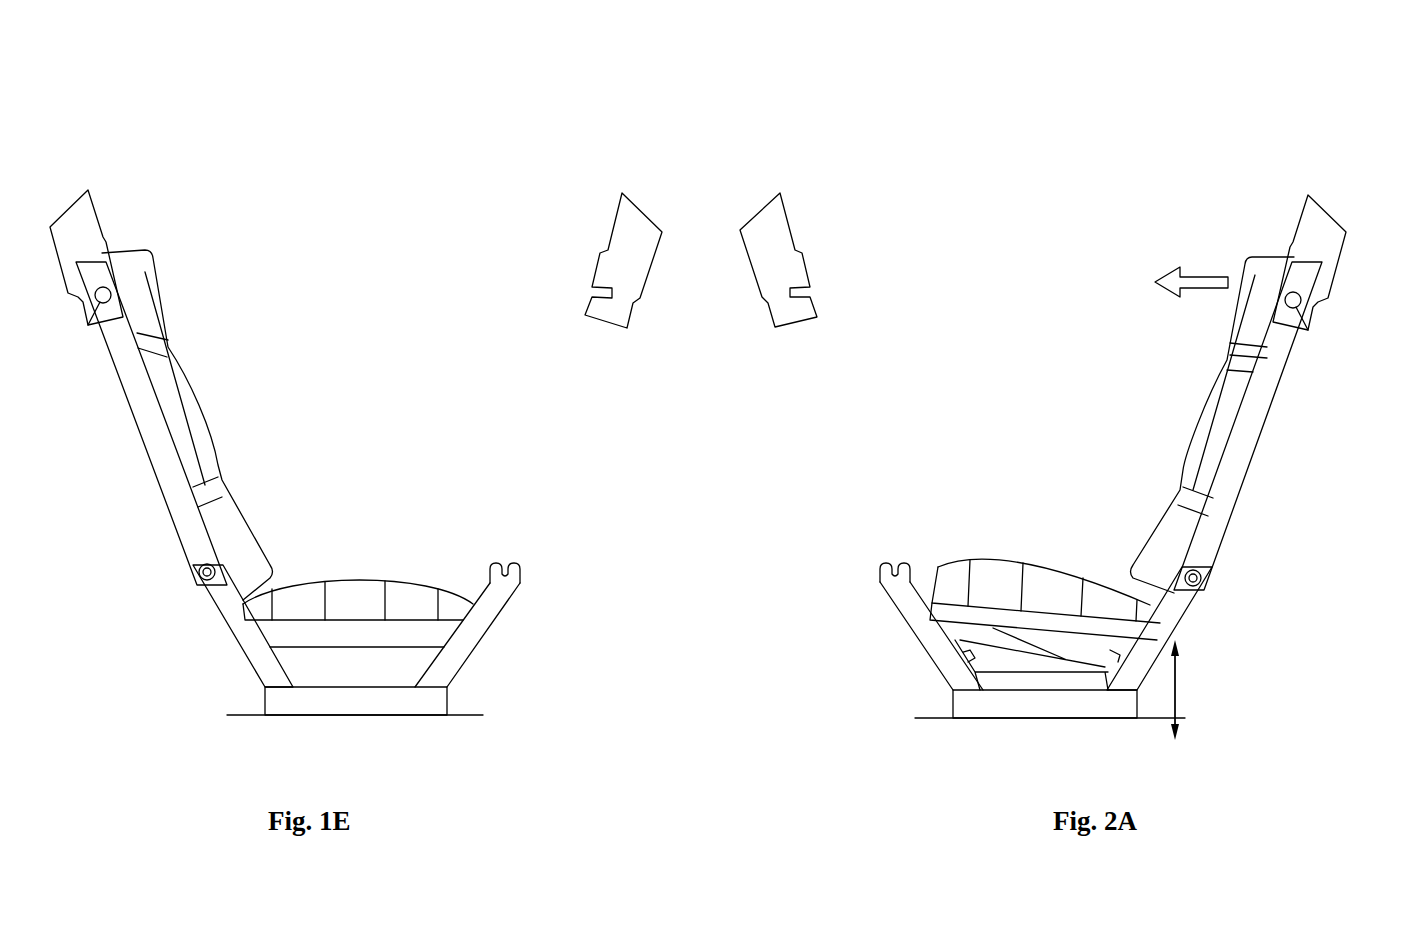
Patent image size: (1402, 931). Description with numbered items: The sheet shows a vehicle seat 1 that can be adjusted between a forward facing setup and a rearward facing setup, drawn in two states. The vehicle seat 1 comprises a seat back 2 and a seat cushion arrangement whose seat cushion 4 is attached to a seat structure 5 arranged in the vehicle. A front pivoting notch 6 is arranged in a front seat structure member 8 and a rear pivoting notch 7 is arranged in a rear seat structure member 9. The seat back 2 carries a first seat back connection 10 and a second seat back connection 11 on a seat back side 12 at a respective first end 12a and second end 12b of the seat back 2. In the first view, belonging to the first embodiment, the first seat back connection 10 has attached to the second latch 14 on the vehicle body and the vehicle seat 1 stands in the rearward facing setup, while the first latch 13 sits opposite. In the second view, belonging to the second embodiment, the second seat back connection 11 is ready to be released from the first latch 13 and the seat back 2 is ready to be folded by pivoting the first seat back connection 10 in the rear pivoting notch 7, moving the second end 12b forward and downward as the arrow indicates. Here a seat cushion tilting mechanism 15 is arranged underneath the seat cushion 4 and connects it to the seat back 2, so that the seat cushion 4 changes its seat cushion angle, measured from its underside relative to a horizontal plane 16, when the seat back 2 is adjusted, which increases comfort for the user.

In FIG. 1E, the vehicle seat 1 is at (480, 102).
In FIG. 2A, the vehicle seat 1 is at (922, 102).
In FIG. 1E, the seat back 2 is at (147, 425).
In FIG. 2A, the seat back 2 is at (1257, 425).
In FIG. 1E, the seat cushion 4 is at (355, 605).
In FIG. 2A, the seat cushion 4 is at (1046, 605).
In FIG. 1E, the seat structure 5 is at (420, 705).
In FIG. 2A, the seat structure 5 is at (957, 708).
In FIG. 1E, the front pivoting notch 6 is at (200, 580).
In FIG. 2A, the front pivoting notch 6 is at (883, 587).
In FIG. 1E, the rear pivoting notch 7 is at (522, 578).
In FIG. 2A, the rear pivoting notch 7 is at (1208, 580).
In FIG. 1E, the front seat structure member 8 is at (250, 650).
In FIG. 2A, the front seat structure member 8 is at (896, 626).
In FIG. 1E, the rear seat structure member 9 is at (502, 625).
In FIG. 2A, the rear seat structure member 9 is at (1177, 622).
In FIG. 1E, the first seat back connection 10 is at (87, 323).
In FIG. 2A, the first seat back connection 10 is at (1212, 593).
In FIG. 1E, the second seat back connection 11 is at (203, 582).
In FIG. 2A, the second seat back connection 11 is at (1310, 333).
In FIG. 1E, the seat back side 12 is at (147, 425).
In FIG. 2A, the seat back side 12 is at (1257, 425).
In FIG. 1E, the first end 12a is at (115, 365).
In FIG. 2A, the first end 12a is at (1215, 552).
In FIG. 1E, the second end 12b is at (185, 545).
In FIG. 2A, the second end 12b is at (1290, 365).
In FIG. 1E, the first latch 13 is at (645, 202).
In FIG. 2A, the first latch 13 is at (1332, 205).
In FIG. 1E, the second latch 14 is at (71, 205).
In FIG. 2A, the second latch 14 is at (755, 202).
In FIG. 2A, the seat cushion tilting mechanism 15 is at (860, 622).
In FIG. 2A, the horizontal plane 16 is at (1160, 720).